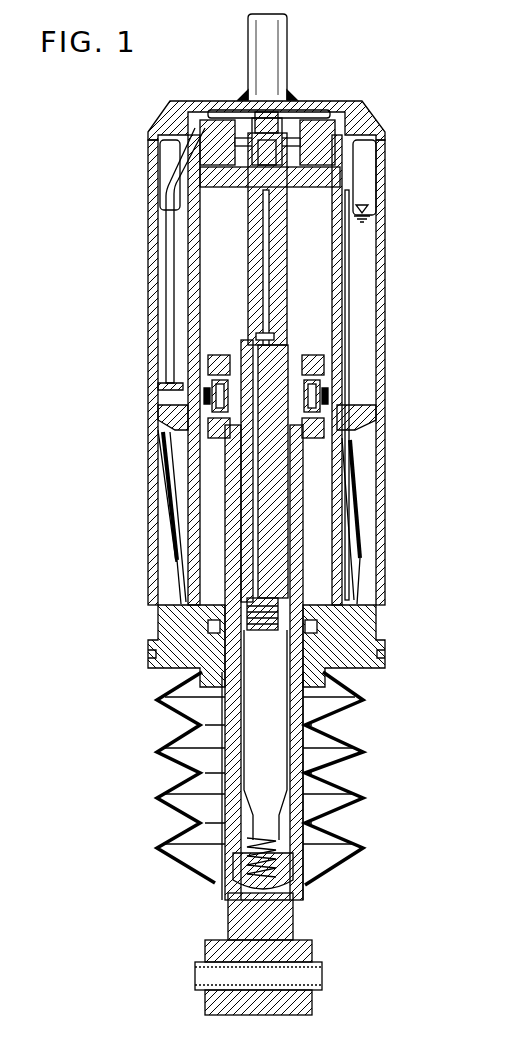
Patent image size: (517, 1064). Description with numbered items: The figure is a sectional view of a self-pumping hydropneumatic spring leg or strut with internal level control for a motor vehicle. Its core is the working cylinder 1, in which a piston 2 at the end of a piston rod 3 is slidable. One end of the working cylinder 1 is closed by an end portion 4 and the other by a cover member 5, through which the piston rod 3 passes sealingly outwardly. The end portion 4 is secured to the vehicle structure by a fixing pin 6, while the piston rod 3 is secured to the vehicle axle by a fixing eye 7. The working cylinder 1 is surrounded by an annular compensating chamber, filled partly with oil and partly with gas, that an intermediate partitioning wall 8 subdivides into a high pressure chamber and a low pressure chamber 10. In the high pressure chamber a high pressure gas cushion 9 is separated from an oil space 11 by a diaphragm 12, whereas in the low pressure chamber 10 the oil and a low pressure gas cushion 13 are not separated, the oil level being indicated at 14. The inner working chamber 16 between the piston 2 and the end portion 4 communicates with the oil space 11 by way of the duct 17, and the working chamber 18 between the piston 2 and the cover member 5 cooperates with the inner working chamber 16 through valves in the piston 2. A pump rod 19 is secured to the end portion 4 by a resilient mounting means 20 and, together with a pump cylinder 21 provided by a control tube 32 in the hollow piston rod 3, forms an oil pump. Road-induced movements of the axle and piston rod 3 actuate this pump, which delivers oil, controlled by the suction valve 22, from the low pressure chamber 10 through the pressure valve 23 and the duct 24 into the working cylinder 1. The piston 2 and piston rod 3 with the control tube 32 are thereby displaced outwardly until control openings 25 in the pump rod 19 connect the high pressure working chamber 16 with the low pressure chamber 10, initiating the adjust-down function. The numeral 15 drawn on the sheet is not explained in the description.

The working cylinder 1 is at (332, 507).
The piston 2 is at (210, 388).
The piston rod 3 is at (297, 645).
The end portion 4 is at (355, 107).
The cover member 5 is at (175, 660).
The fixing pin 6 is at (278, 57).
The fixing eye 7 is at (312, 978).
The intermediate partitioning wall 8 is at (362, 404).
The high pressure gas cushion 9 is at (160, 512).
The low pressure chamber 10 is at (362, 275).
The oil space 11 is at (182, 555).
The diaphragm 12 is at (170, 593).
The low pressure gas cushion 13 is at (168, 152).
The oil level 14 is at (370, 210).
The seal ring 15 is at (203, 397).
The inner working chamber 16 is at (215, 263).
The duct 17 is at (345, 242).
The working chamber 18 is at (318, 480).
The pump rod 19 is at (290, 203).
The resilient mounting means 20 is at (350, 137).
The pump cylinder 21 is at (250, 714).
The suction valve 22 is at (275, 615).
The pressure valve 23 is at (283, 847).
The duct 24 is at (290, 758).
The control openings 25 is at (245, 347).
The control tube 32 is at (240, 770).